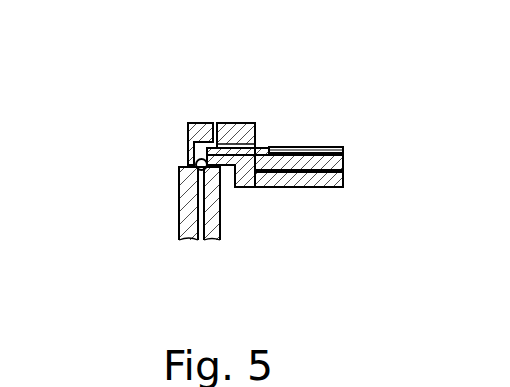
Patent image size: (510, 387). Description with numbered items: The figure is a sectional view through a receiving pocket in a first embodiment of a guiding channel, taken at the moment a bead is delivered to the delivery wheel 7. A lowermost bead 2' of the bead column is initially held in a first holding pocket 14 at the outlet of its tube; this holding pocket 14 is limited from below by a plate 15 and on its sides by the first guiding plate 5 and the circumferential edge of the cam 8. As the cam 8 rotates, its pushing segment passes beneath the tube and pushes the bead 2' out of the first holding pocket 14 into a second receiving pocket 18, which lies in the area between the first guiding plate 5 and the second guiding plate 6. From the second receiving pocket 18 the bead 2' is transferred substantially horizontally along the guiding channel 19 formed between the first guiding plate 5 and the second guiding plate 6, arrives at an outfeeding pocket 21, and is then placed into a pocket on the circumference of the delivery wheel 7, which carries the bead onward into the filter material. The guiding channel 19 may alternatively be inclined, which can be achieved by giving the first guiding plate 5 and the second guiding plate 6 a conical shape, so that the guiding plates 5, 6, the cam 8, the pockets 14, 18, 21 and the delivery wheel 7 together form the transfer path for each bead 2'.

The first guiding plate 5 is at (237, 123).
The second guiding plate 6 is at (188, 123).
The cam 8 is at (328, 148).
The outfeeding pocket 21 is at (195, 163).
The lowermost bead 2' is at (128, 203).
The delivery wheel 7 is at (180, 222).
The guiding channel 19 is at (227, 188).
The second receiving pocket 18 is at (251, 175).
The first holding pocket 14 is at (275, 158).
The plate 15 is at (338, 158).